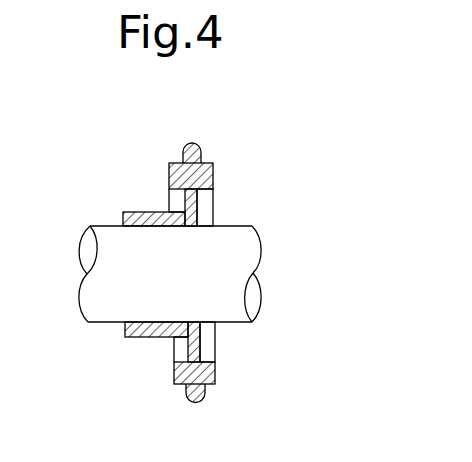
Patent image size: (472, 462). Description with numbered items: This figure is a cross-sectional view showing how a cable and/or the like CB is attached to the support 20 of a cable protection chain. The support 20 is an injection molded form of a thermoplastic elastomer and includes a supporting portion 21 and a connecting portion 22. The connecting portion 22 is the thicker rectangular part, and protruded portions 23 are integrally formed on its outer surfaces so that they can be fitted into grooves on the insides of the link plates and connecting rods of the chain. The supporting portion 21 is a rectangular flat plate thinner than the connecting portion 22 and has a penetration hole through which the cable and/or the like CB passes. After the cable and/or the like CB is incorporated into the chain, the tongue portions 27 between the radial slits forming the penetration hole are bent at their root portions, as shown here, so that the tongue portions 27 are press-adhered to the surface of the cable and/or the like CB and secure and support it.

The support 20 is at (193, 267).
The supporting portion 21 is at (193, 213).
The connecting portion 22 is at (213, 163).
The protruded portion 23 is at (186, 143).
The tongue portion 27 is at (128, 212).
The cable and/or the like CB is at (262, 247).